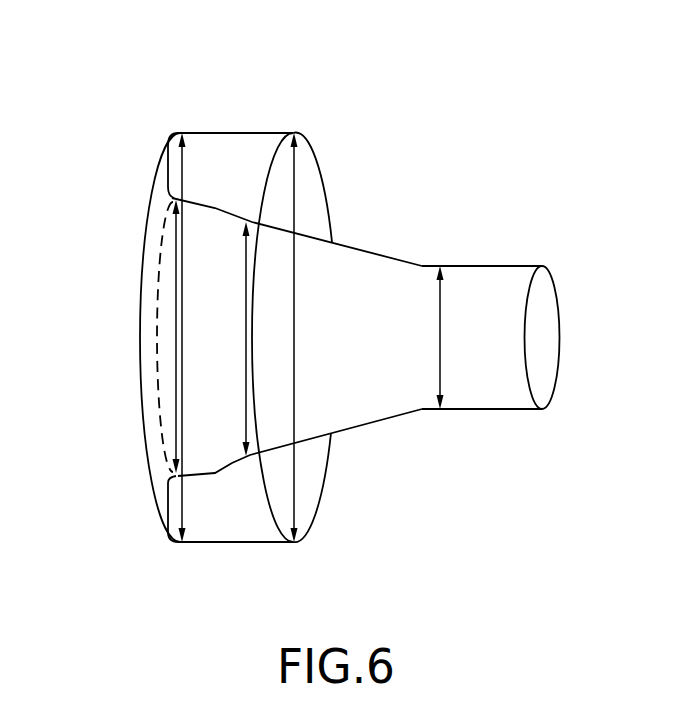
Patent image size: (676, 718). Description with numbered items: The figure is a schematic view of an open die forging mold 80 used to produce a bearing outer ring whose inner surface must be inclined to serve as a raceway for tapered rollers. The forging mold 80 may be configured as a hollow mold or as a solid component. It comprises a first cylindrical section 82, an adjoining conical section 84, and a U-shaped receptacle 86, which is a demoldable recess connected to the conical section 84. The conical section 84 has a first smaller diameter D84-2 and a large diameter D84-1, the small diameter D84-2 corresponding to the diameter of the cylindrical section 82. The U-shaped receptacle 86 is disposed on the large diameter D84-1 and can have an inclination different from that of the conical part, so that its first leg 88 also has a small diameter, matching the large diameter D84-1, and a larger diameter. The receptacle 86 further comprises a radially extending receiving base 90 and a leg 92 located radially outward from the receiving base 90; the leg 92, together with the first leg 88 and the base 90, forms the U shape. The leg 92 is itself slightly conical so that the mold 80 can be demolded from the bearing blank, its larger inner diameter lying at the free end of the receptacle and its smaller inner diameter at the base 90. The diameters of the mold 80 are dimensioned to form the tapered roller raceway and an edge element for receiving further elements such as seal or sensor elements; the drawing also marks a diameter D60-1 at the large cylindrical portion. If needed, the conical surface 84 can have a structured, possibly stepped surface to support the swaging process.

The forging mold 80 is at (364, 62).
The first cylindrical section 82 is at (532, 237).
The conical section 84 is at (373, 214).
The U-shaped receptacle 86 is at (207, 108).
The first leg 88 is at (215, 208).
The receiving base 90 is at (167, 173).
The leg 92 is at (250, 133).
The large diameter D84-1 is at (320, 300).
The first smaller diameter D84-2 is at (482, 340).
The outer diameter of cylindrical portion D60-1 is at (293, 472).